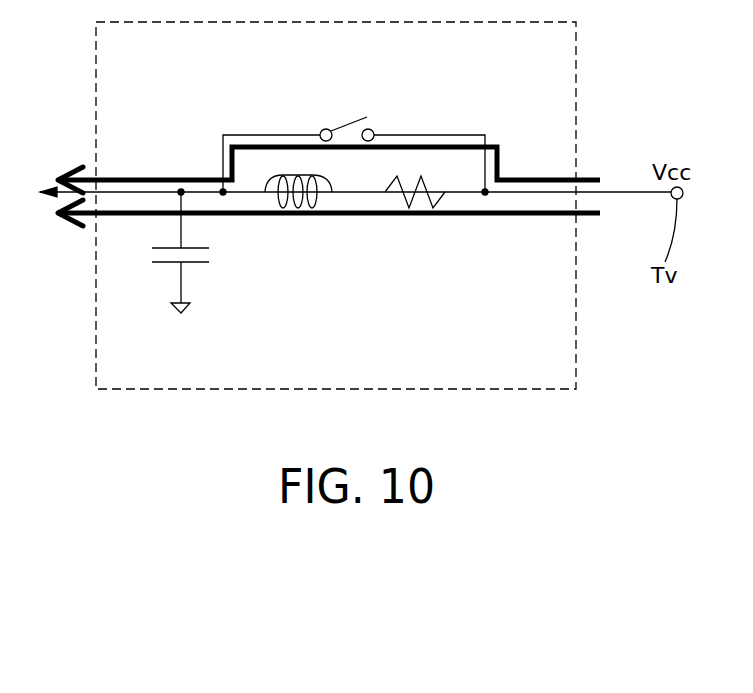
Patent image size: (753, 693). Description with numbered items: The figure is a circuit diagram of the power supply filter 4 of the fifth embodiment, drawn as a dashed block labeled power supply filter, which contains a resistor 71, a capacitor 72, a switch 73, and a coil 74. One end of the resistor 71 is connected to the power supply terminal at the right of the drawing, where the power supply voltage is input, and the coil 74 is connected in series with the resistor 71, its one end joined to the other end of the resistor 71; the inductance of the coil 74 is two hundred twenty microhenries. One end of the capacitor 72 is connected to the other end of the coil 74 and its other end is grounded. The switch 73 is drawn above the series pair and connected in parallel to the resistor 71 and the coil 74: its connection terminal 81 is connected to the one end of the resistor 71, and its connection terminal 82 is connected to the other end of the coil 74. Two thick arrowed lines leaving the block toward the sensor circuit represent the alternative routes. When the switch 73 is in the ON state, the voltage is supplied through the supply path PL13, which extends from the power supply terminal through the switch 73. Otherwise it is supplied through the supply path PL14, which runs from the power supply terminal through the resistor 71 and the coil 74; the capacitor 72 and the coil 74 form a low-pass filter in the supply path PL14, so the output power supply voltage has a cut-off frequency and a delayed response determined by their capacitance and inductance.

The power supply filter 4 is at (92, 62).
The resistor 71 is at (395, 172).
The capacitor 72 is at (167, 265).
The switch 73 is at (352, 125).
The coil 74 is at (280, 172).
The connection terminal 81 is at (374, 130).
The connection terminal 82 is at (321, 130).
The supply path PL13 is at (596, 178).
The supply path PL14 is at (583, 217).